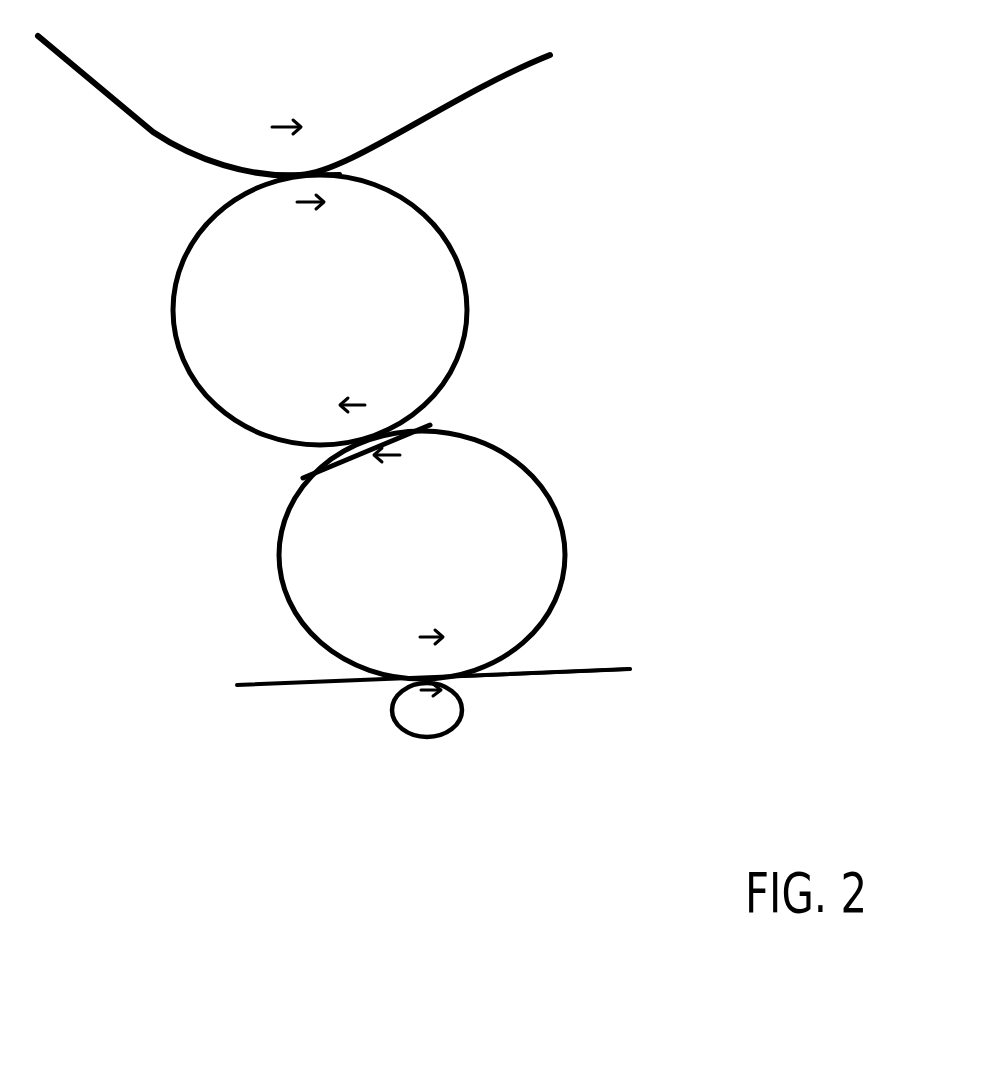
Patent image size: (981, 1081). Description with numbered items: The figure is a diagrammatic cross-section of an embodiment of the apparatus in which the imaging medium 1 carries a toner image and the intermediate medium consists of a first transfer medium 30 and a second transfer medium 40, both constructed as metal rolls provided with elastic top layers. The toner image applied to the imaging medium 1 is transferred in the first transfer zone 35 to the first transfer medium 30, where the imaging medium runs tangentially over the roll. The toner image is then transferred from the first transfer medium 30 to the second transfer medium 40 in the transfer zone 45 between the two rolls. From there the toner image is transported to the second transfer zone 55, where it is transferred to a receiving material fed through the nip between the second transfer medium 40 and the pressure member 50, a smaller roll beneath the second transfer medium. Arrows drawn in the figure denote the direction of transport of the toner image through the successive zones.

The imaging medium 1 is at (520, 68).
The first transfer zone 35 is at (300, 173).
The first transfer medium 30 is at (467, 323).
The transfer zone 45 is at (430, 425).
The second transfer medium 40 is at (565, 562).
The second transfer zone 55 is at (545, 671).
The pressure member 50 is at (462, 713).